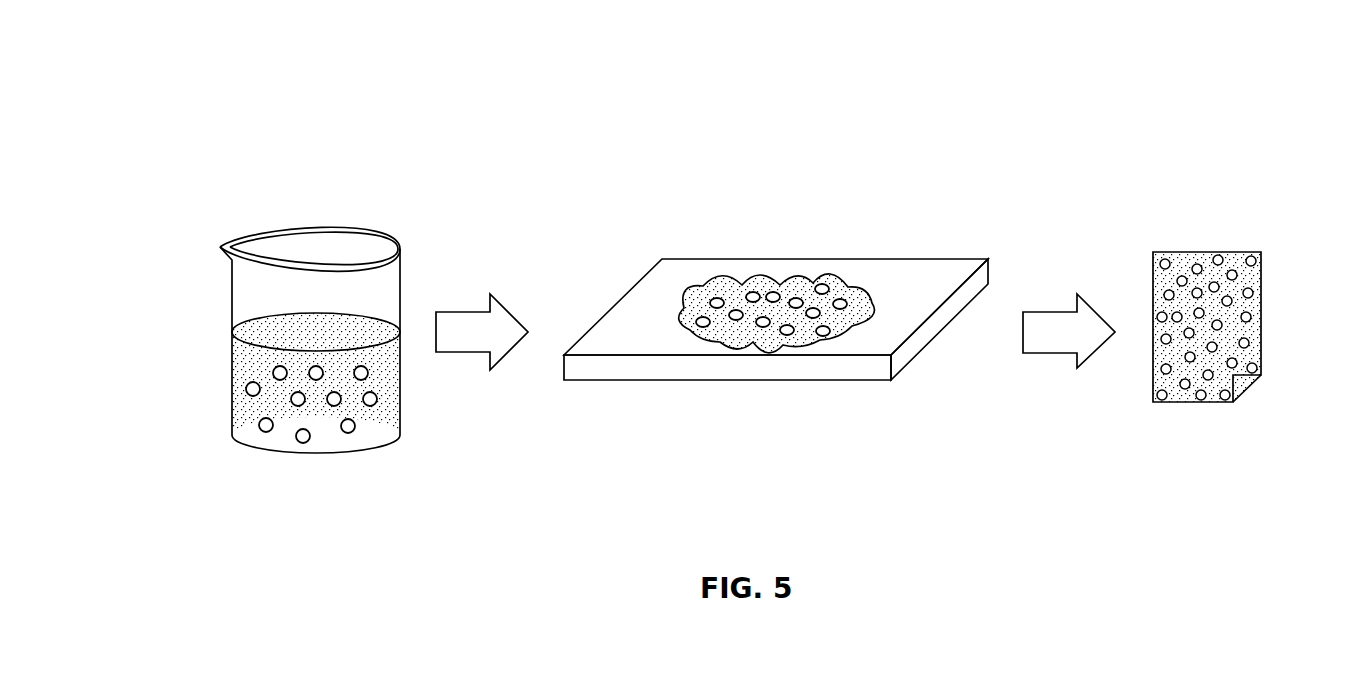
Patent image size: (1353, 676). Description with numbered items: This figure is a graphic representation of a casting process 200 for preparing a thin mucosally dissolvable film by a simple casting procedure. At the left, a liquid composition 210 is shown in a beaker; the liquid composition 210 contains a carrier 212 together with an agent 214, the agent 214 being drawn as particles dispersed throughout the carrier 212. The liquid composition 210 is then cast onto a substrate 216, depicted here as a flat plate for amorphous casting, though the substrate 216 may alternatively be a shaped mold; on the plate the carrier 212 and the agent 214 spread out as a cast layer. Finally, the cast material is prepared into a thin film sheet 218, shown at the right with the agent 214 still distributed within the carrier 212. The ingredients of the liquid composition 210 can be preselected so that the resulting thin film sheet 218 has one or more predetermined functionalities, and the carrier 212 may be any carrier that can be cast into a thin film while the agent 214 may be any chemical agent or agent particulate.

The process for forming a film 200 is at (148, 66).
The liquid composition 210 is at (250, 232).
The carrier 212 is at (247, 363).
The agent 214 is at (259, 425).
The substrate 216 is at (693, 267).
The thin film sheet 218 is at (1210, 252).